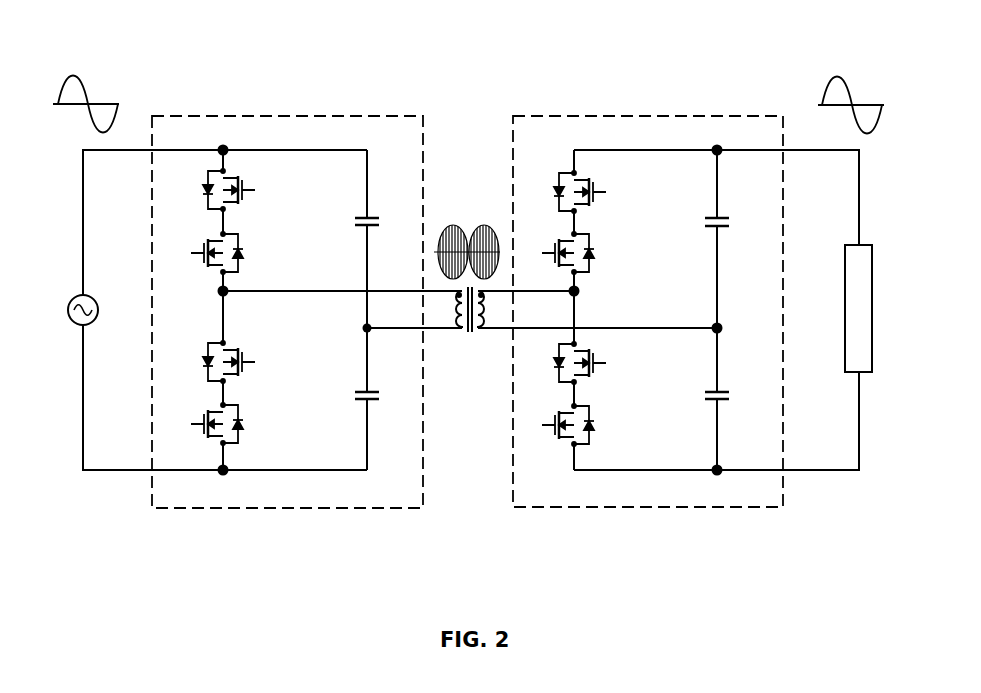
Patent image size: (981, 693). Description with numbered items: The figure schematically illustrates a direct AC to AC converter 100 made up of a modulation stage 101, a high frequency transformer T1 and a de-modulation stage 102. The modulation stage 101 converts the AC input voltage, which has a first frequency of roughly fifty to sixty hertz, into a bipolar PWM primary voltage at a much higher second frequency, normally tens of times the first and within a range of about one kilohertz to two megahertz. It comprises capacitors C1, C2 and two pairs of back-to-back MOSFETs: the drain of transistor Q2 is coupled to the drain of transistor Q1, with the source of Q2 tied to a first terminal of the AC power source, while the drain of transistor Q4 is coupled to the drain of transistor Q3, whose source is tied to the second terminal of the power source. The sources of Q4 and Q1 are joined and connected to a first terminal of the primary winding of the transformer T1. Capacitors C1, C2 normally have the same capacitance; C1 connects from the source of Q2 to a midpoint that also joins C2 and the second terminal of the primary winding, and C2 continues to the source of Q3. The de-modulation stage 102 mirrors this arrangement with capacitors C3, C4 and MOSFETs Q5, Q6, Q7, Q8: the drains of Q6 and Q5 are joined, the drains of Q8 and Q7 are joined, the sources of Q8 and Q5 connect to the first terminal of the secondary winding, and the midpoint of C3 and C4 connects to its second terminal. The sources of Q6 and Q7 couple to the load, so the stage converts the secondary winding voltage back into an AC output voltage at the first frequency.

The direct AC to AC converter 100 is at (636, 34).
The modulation stage 101 is at (175, 511).
The de-modulation stage 102 is at (536, 511).
The transistor Q1 is at (233, 253).
The transistor Q2 is at (212, 190).
The transistor Q3 is at (233, 424).
The transistor Q4 is at (212, 362).
The transistor Q5 is at (583, 253).
The transistor Q6 is at (563, 192).
The transistor Q7 is at (583, 425).
The transistor Q8 is at (563, 363).
The capacitor C1 is at (379, 222).
The capacitor C2 is at (407, 365).
The capacitor C3 is at (731, 222).
The capacitor C4 is at (731, 395).
The high frequency transformer T1 is at (470, 320).